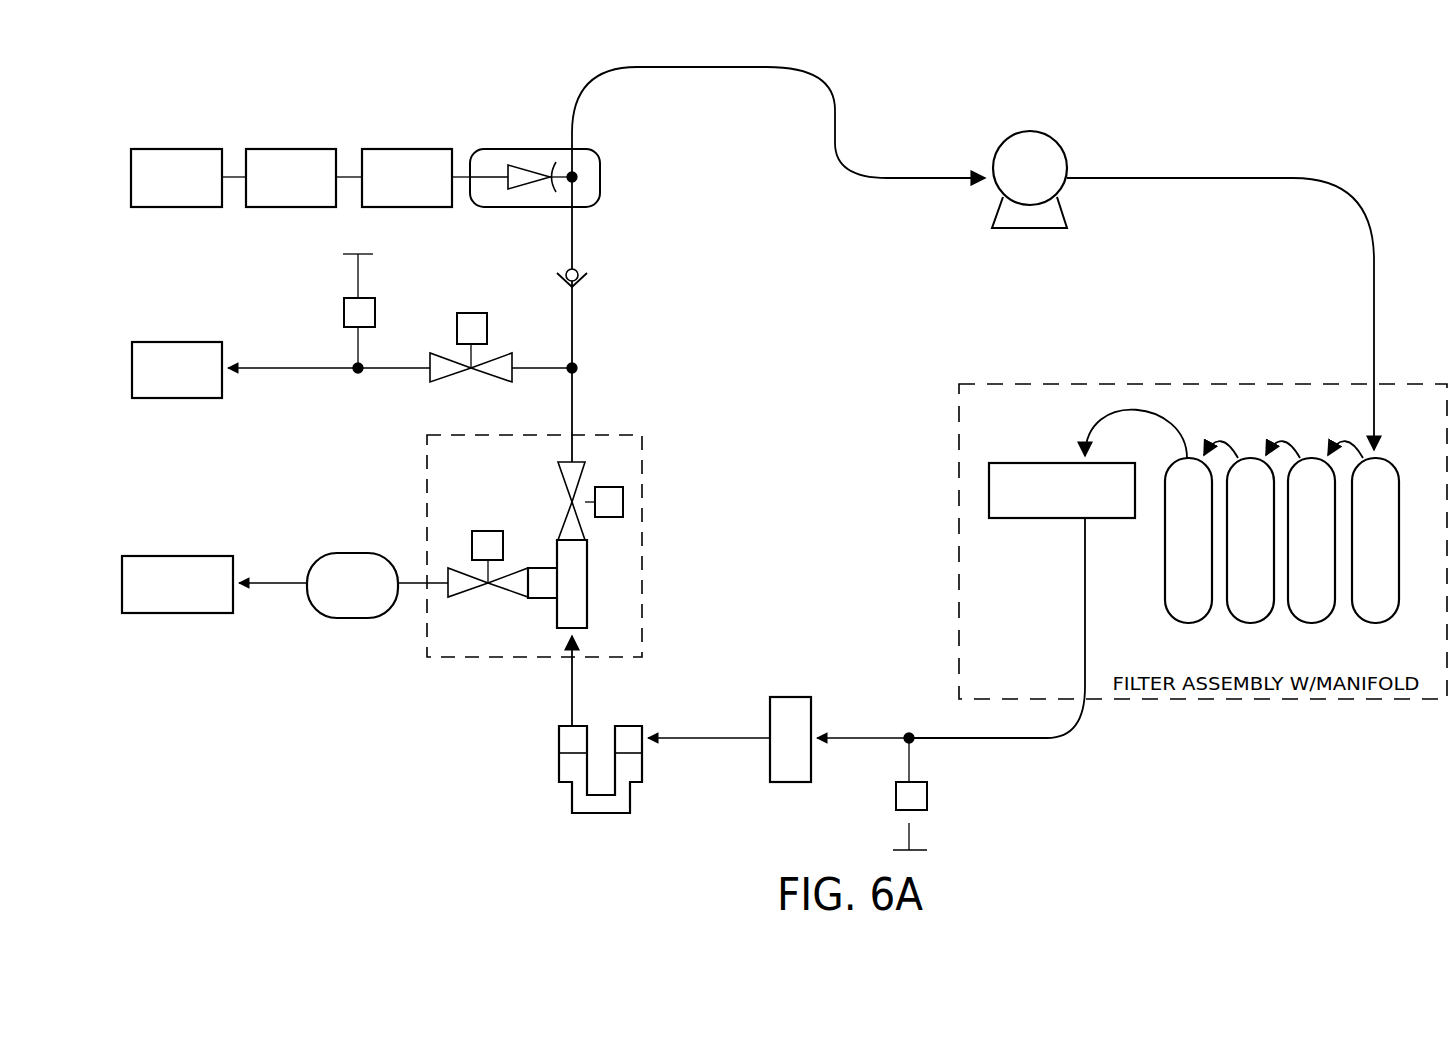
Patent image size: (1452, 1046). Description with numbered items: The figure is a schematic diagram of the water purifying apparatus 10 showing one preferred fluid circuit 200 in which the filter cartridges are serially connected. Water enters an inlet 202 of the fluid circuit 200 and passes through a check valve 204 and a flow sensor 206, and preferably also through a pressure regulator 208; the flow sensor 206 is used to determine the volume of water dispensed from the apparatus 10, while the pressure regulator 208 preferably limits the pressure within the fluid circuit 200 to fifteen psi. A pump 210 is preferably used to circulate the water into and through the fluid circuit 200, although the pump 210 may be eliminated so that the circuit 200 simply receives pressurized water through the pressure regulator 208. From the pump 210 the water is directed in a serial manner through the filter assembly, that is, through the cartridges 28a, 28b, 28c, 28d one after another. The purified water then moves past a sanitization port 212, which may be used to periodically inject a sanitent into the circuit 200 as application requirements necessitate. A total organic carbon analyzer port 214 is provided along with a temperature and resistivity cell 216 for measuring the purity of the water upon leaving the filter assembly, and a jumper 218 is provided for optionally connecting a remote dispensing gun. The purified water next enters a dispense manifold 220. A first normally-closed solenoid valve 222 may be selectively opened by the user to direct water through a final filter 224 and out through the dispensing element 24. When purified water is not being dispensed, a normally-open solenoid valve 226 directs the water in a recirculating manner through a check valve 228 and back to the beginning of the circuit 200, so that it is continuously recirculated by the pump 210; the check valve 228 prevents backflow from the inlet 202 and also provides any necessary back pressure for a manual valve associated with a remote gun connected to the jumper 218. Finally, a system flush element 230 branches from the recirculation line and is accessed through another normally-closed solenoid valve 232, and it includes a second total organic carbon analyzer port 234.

The apparatus 10 is at (1290, 97).
The dispensing element 24 is at (205, 556).
The cartridge 28a is at (1375, 623).
The cartridge 28b is at (1310, 623).
The cartridge 28c is at (1250, 623).
The cartridge 28d is at (1186, 623).
The fluid circuit 200 is at (1152, 178).
The inlet 202 is at (196, 149).
The check valve 204 is at (320, 149).
The flow sensor 206 is at (428, 149).
The pressure regulator 208 is at (520, 149).
The pump 210 is at (1030, 131).
The sanitization port 212 is at (1046, 443).
The total organic carbon analyzer port 214 is at (928, 781).
The temperature and resistivity cell 216 is at (800, 697).
The jumper 218 is at (620, 813).
The dispense manifold 220 is at (600, 432).
The first normally-closed solenoid valve 222 is at (503, 597).
The final filter 224 is at (355, 553).
The normally-open solenoid valve 226 is at (582, 478).
The check valve 228 is at (577, 270).
The system flush element 230 is at (205, 342).
The normally-closed solenoid valve 232 is at (492, 353).
The second total organic carbon analyzer port 234 is at (372, 298).